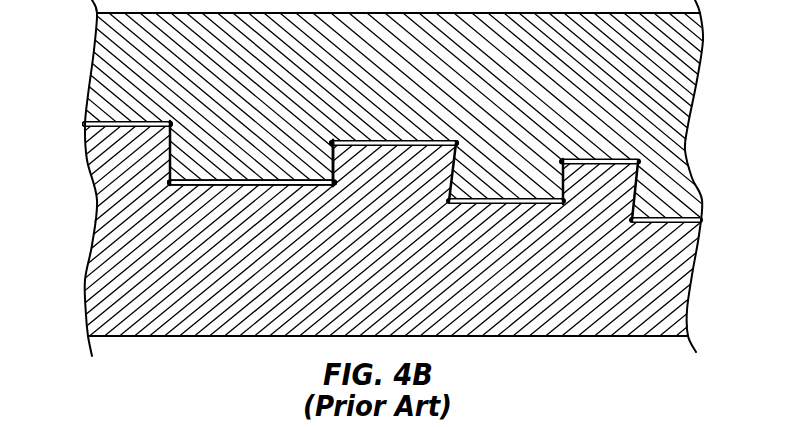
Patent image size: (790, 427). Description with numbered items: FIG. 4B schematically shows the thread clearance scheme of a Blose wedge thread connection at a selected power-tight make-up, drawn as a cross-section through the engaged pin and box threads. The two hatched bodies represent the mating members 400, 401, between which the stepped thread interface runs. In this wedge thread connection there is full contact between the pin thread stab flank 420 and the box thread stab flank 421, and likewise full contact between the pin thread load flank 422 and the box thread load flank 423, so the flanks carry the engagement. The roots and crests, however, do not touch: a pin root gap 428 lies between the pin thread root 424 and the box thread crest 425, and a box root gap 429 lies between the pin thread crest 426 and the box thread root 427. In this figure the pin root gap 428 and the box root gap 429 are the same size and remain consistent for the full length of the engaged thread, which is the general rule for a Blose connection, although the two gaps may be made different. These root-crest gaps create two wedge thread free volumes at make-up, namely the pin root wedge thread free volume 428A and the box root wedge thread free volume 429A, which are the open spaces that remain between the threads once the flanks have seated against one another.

The substrate 400 is at (470, 262).
The overlying layer 401 is at (517, 74).
The pin thread stab flank 420 is at (168, 156).
The box thread stab flank 421 is at (181, 153).
The pin thread load flank 422 is at (350, 192).
The box thread load flank 423 is at (332, 168).
The pin thread root 424 is at (252, 187).
The box thread crest 425 is at (250, 182).
The pin thread crest 426 is at (447, 175).
The box thread root 427 is at (420, 170).
The pin root gap 428 is at (197, 157).
The pin root wedge thread free volume 428A is at (308, 187).
The box root gap 429 is at (365, 147).
The box root wedge thread free volume 429A is at (127, 121).